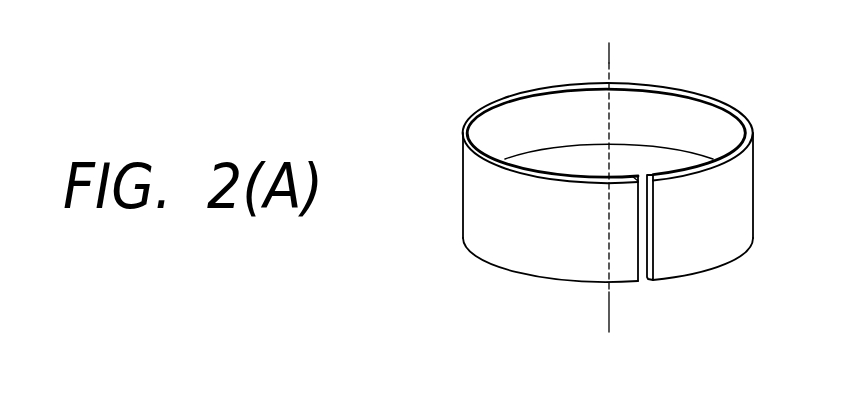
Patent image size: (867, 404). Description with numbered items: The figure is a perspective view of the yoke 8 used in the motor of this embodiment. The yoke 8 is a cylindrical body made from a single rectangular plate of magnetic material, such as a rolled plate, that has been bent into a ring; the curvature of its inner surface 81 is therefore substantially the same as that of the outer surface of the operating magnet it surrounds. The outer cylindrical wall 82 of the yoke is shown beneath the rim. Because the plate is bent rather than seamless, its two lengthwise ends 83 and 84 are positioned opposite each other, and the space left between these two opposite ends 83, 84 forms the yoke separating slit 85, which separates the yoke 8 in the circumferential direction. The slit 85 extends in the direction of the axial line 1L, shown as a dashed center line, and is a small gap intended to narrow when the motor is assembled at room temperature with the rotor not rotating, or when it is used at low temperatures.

The yoke 8 is at (705, 63).
The inner surface 81 is at (545, 107).
The cylindrical wall of ring 82 is at (520, 250).
The end of the plate 83 is at (635, 217).
The end of the plate 84 is at (657, 217).
The yoke separating slit 85 is at (647, 286).
The axial line 1L is at (607, 62).